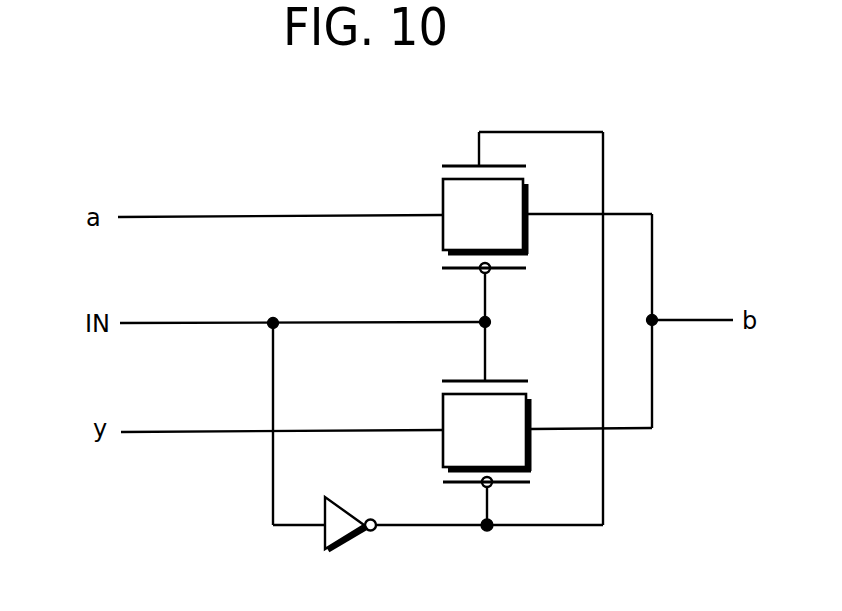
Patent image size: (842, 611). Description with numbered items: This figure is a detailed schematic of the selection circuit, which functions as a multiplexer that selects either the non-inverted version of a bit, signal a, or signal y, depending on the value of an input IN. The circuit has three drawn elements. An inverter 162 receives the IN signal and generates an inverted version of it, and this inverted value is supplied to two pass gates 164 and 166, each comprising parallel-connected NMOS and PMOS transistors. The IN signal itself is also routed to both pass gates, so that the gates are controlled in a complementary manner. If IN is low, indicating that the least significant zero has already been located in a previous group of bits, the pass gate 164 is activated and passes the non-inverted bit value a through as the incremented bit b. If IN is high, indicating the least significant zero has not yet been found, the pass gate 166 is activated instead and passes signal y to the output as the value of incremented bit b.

The inverter 162 is at (352, 511).
The pass gate 164 is at (504, 228).
The pass gate 166 is at (506, 442).